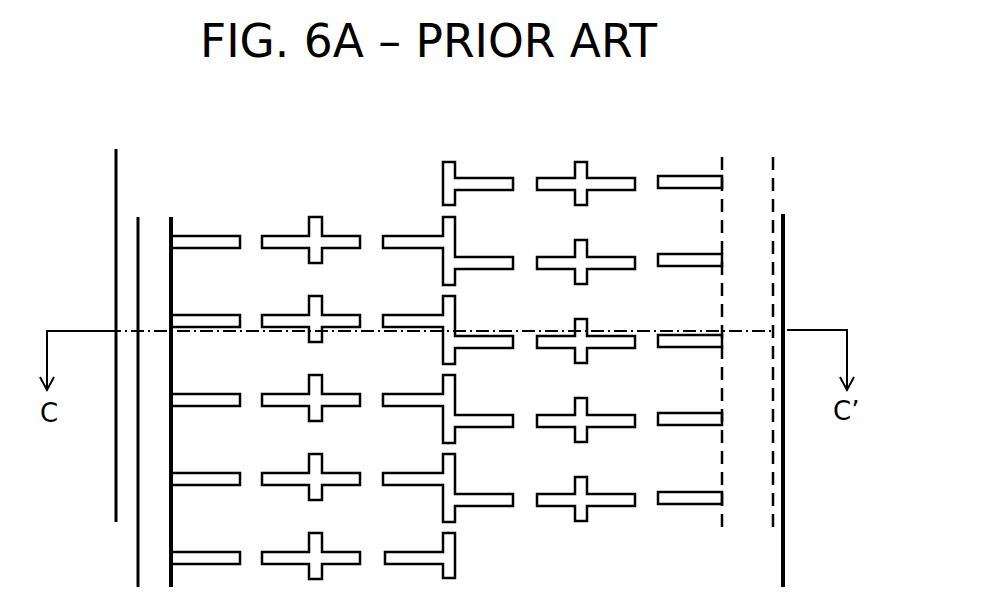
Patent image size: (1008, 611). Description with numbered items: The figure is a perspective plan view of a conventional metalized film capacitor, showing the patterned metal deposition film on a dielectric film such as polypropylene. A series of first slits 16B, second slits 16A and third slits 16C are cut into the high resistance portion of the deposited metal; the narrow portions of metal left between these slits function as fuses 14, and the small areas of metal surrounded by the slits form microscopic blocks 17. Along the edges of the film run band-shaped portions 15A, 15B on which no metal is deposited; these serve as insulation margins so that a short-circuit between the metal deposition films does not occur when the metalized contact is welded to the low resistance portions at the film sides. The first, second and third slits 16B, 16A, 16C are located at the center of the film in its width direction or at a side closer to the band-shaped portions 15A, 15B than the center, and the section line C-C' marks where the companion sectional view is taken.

The fuses 14 is at (313, 287).
The band-shaped portion 15A is at (160, 552).
The band-shaped portion 15B is at (752, 238).
The second slits 16A is at (698, 176).
The first slits 16B is at (448, 162).
The third slits 16C is at (583, 245).
The microscopic blocks 17 is at (248, 435).